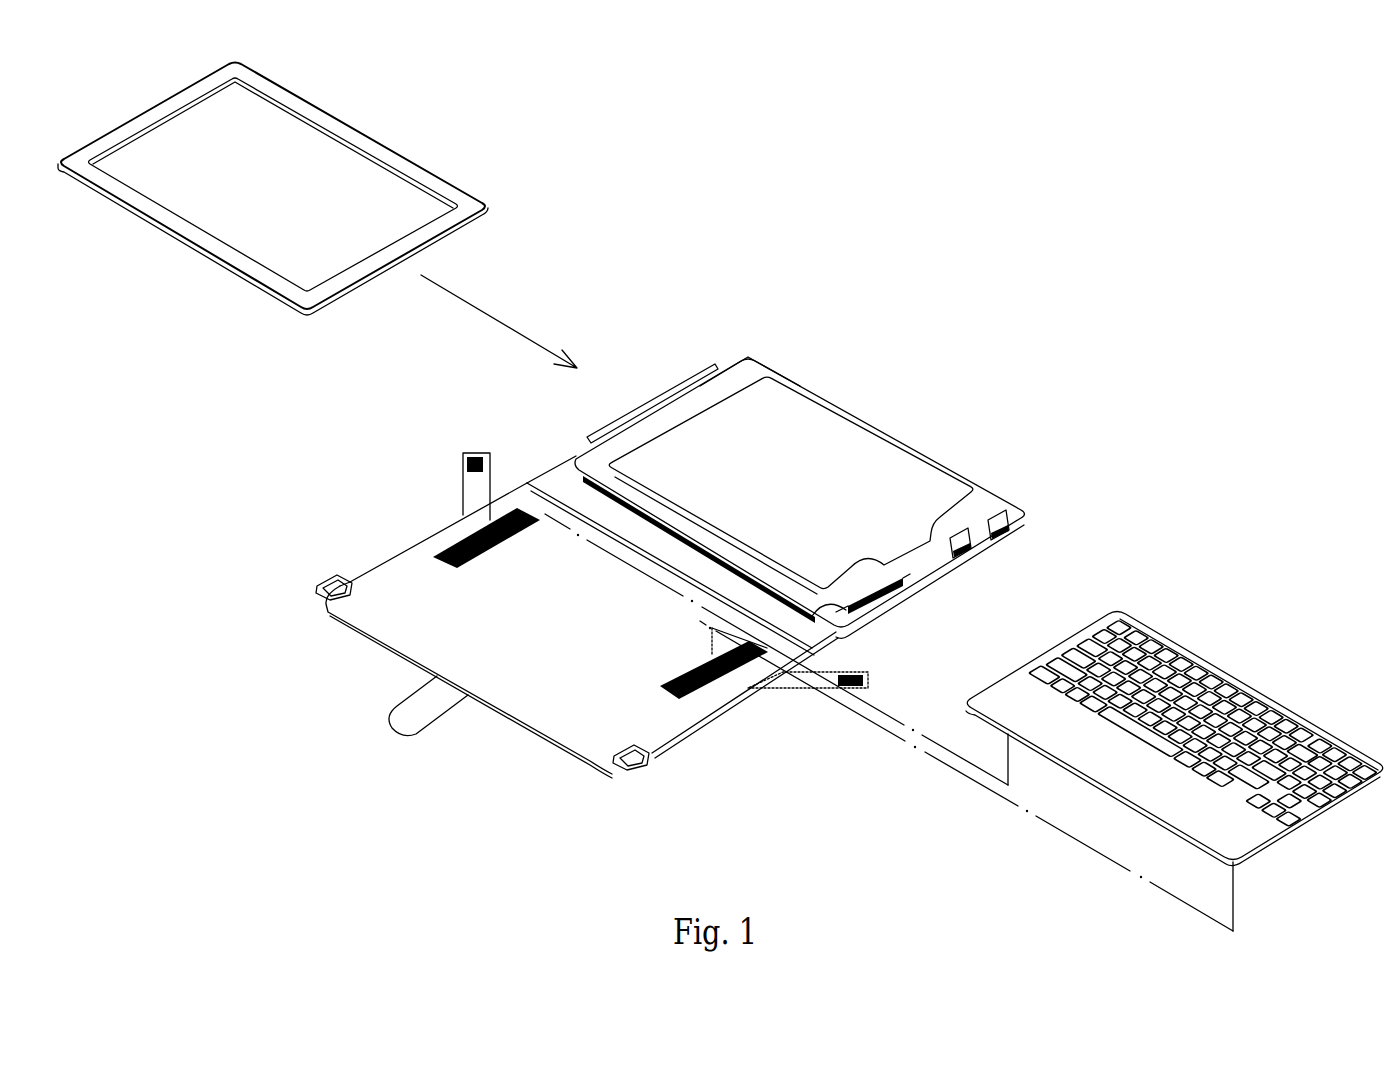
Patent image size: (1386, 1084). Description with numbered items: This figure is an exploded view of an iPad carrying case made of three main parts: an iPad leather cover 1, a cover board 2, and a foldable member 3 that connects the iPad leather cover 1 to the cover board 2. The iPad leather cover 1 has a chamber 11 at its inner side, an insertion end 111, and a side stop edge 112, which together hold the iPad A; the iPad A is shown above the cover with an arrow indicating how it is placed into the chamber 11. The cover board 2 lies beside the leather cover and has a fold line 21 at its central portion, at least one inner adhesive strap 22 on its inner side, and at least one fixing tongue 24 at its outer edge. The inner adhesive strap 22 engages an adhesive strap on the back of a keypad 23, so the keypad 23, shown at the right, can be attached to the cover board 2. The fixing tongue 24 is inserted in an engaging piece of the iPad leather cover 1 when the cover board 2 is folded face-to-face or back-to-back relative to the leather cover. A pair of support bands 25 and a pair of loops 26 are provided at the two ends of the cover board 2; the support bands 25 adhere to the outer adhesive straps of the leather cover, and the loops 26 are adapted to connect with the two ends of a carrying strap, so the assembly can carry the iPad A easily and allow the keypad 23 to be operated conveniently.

The iPad A is at (313, 162).
The iPad leather cover 1 is at (837, 403).
The chamber 11 is at (915, 490).
The insertion end 111 is at (737, 357).
The side stop edge 112 is at (667, 395).
The cover board 2 is at (557, 723).
The fold line 21 is at (433, 553).
The inner adhesive strap 22 is at (470, 537).
The keypad 23 is at (1247, 688).
The fixing tongue 24 is at (412, 718).
The support band 25 is at (473, 488).
The loop 26 is at (327, 580).
The foldable member 3 is at (543, 483).